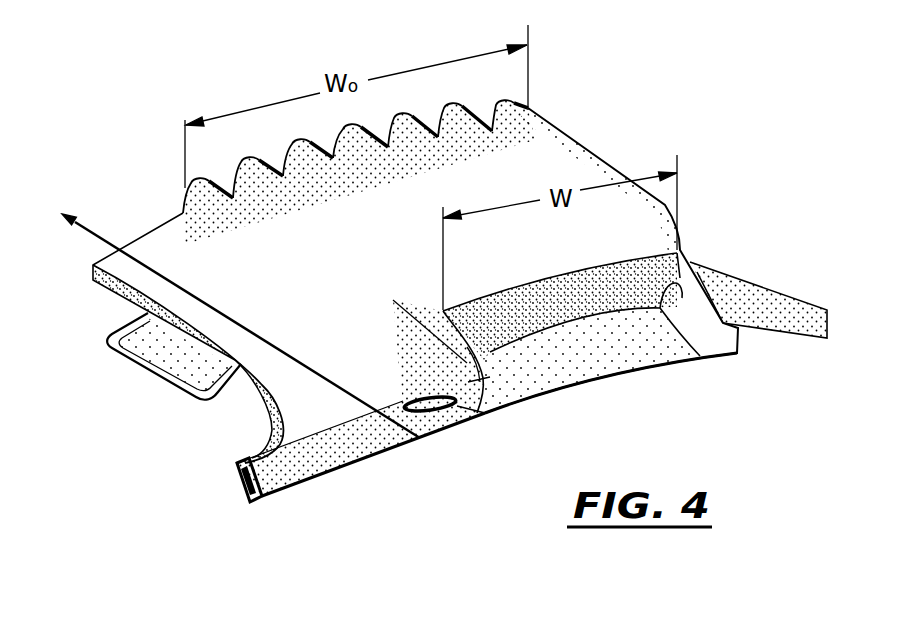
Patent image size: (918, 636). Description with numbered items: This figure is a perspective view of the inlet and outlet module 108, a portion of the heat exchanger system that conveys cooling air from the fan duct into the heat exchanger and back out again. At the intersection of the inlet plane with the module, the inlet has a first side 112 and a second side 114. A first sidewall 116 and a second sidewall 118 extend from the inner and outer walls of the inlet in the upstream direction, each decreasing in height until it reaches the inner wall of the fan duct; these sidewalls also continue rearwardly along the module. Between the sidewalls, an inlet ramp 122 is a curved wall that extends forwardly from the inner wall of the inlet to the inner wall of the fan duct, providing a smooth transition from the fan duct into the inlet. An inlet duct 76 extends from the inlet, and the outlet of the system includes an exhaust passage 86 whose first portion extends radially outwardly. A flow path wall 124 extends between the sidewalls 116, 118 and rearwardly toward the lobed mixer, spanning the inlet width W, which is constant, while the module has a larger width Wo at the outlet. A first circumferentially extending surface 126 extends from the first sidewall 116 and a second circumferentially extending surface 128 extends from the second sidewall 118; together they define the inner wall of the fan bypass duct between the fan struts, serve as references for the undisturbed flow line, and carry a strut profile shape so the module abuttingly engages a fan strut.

The inlet and outlet module 108 is at (660, 90).
The flow path wall 124 is at (480, 187).
The first circumferentially extending surface 126 is at (301, 403).
The exhaust passage 86 is at (163, 351).
The second circumferentially extending surface 128 is at (727, 285).
The second sidewall 118 is at (695, 268).
The first sidewall 116 is at (445, 338).
The inlet ramp 122 is at (590, 340).
The second side 114 is at (680, 310).
The first side 112 is at (477, 410).
The inlet duct 76 is at (427, 417).